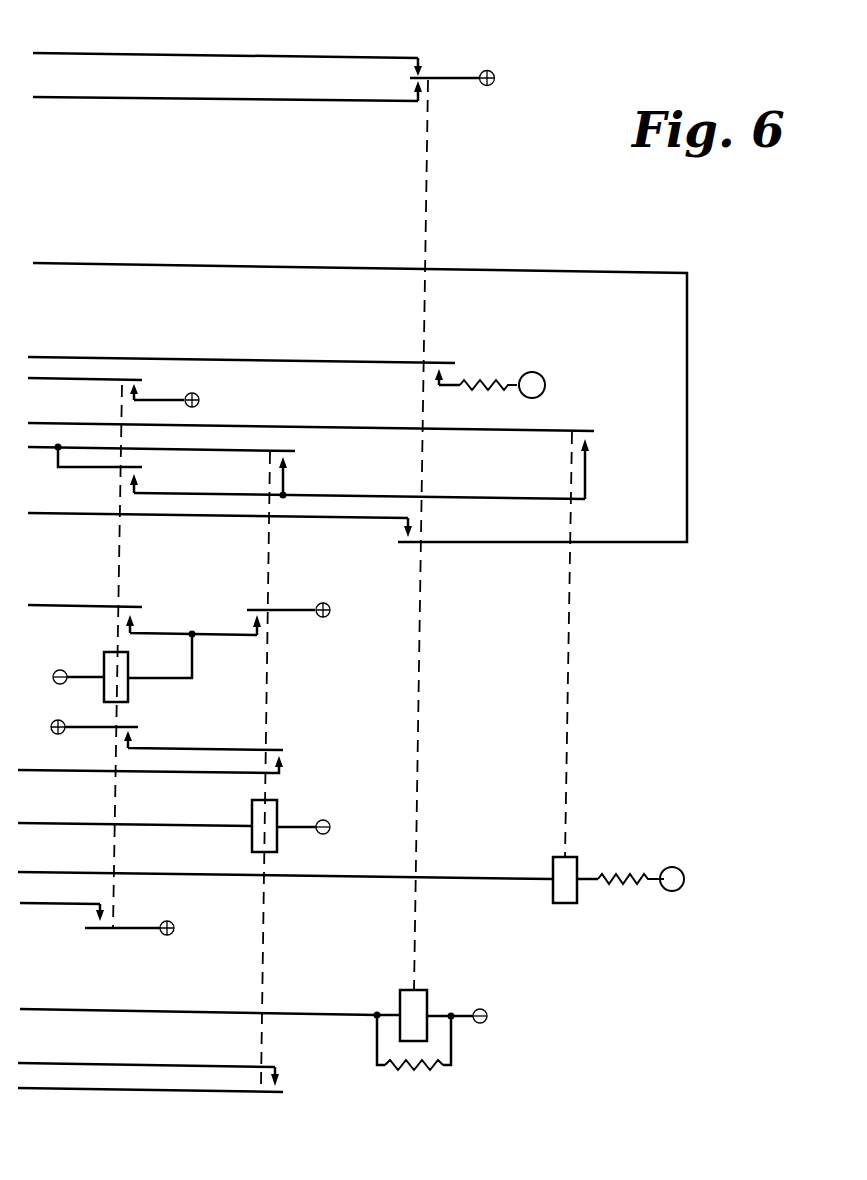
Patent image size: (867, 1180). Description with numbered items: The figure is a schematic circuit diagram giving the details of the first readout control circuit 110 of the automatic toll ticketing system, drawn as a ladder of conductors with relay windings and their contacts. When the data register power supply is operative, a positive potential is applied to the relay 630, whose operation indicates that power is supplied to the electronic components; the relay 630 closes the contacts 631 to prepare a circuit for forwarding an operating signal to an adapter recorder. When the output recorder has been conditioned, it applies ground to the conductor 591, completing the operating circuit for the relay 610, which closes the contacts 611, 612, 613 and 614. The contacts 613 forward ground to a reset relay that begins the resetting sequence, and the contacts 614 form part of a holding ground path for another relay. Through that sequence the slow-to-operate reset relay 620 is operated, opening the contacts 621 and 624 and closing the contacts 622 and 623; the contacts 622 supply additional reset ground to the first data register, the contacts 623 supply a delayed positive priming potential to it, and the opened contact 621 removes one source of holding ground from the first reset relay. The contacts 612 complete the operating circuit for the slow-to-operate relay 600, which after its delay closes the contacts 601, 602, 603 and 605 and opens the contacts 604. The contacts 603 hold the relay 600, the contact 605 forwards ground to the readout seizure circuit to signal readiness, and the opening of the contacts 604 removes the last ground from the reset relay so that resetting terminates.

The first readout control circuit 110 is at (648, 32).
The conductor 591 is at (183, 822).
The slow-to-operate relay 600 is at (110, 651).
The contacts 601 is at (143, 385).
The contacts 602 is at (142, 483).
The contacts 603 is at (142, 606).
The contacts 604 is at (140, 731).
The contact 605 is at (90, 921).
The relay 610 is at (280, 845).
The contacts 611 is at (294, 455).
The contacts 612 is at (247, 608).
The contacts 613 is at (290, 759).
The contacts 614 is at (280, 1071).
The slow-to-operate reset relay 620 is at (430, 1003).
The contact 621 is at (419, 73).
The contacts 622 is at (410, 81).
The contacts 623 is at (446, 373).
The contacts 624 is at (398, 537).
The relay 630 is at (551, 864).
The contacts 631 is at (596, 435).